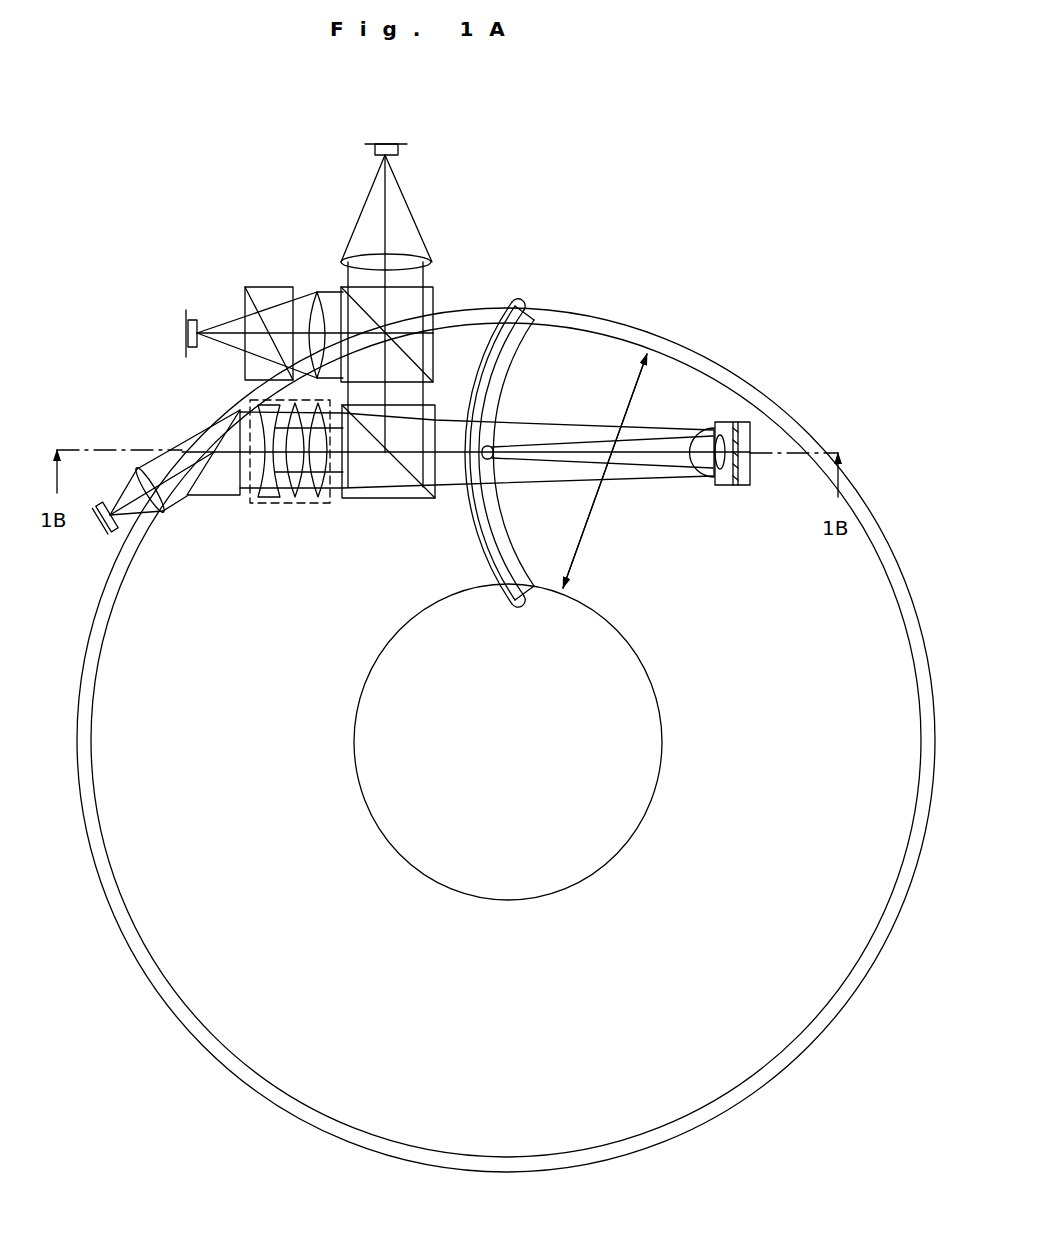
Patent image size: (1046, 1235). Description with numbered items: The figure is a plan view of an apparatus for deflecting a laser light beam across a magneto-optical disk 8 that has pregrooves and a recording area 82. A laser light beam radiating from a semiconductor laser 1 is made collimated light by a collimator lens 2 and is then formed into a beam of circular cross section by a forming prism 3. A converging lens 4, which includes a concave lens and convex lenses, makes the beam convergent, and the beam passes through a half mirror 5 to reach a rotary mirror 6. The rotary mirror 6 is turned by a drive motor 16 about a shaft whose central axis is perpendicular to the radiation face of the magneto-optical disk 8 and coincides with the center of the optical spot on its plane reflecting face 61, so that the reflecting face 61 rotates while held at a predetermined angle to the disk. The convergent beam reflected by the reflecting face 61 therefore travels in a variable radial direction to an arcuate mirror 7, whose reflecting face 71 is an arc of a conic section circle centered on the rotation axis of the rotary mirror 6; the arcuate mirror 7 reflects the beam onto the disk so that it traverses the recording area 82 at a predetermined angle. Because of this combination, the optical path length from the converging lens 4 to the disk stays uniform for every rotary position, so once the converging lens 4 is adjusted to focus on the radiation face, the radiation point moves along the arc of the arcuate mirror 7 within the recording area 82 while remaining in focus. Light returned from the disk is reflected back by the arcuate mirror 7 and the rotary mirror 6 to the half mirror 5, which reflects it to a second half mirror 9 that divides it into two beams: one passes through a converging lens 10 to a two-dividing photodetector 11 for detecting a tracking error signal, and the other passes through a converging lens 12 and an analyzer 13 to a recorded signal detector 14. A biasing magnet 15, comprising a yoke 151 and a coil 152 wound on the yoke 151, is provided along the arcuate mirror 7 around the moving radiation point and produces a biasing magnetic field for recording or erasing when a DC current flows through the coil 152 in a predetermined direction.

The semiconductor laser 1 is at (102, 532).
The collimator lens 2 is at (158, 512).
The forming prism 3 is at (222, 498).
The converging lens 4 is at (305, 503).
The half mirror 5 is at (395, 496).
The rotary mirror 6 is at (740, 420).
The plane reflecting face 61 is at (712, 416).
The arcuate mirror 7 is at (502, 500).
The reflecting face 71 is at (502, 528).
The magneto-optical disk 8 is at (623, 332).
The recording area 82 is at (605, 471).
The half mirror 9 is at (420, 302).
The converging lens 10 is at (405, 257).
The two-dividing photodetector 11 is at (388, 143).
The converging lens 12 is at (317, 292).
The analyzer 13 is at (265, 293).
The recorded signal detector 14 is at (194, 318).
The biasing magnet 15 is at (487, 570).
The yoke 151 is at (503, 586).
The coil 152 is at (480, 540).
The drive motor 16 is at (712, 482).